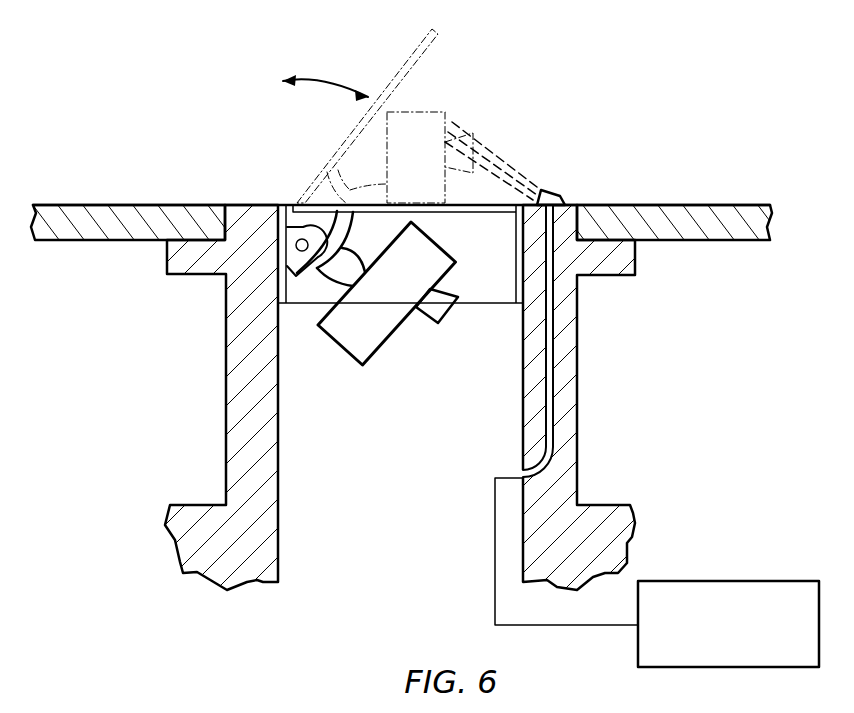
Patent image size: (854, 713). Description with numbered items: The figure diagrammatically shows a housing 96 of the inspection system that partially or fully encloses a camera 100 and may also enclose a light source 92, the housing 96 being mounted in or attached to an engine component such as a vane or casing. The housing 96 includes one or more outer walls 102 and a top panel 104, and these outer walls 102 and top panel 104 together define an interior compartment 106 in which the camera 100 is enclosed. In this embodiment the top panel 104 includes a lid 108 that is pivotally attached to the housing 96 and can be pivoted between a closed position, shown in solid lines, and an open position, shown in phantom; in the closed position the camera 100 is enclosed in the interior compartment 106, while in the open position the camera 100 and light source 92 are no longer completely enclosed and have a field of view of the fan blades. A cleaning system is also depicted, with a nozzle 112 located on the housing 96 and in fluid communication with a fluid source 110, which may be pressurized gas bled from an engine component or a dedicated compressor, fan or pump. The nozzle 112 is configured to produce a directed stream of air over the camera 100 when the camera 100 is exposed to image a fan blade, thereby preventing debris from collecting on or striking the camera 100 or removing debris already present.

The light source 92 is at (470, 133).
The housing 96 is at (655, 393).
The camera 100 is at (437, 107).
The outer walls 102 is at (222, 438).
The top panel 104 is at (249, 203).
The interior compartment 106 is at (387, 477).
The lid 108 is at (403, 63).
The fluid source 110 is at (707, 648).
The nozzle 112 is at (557, 190).